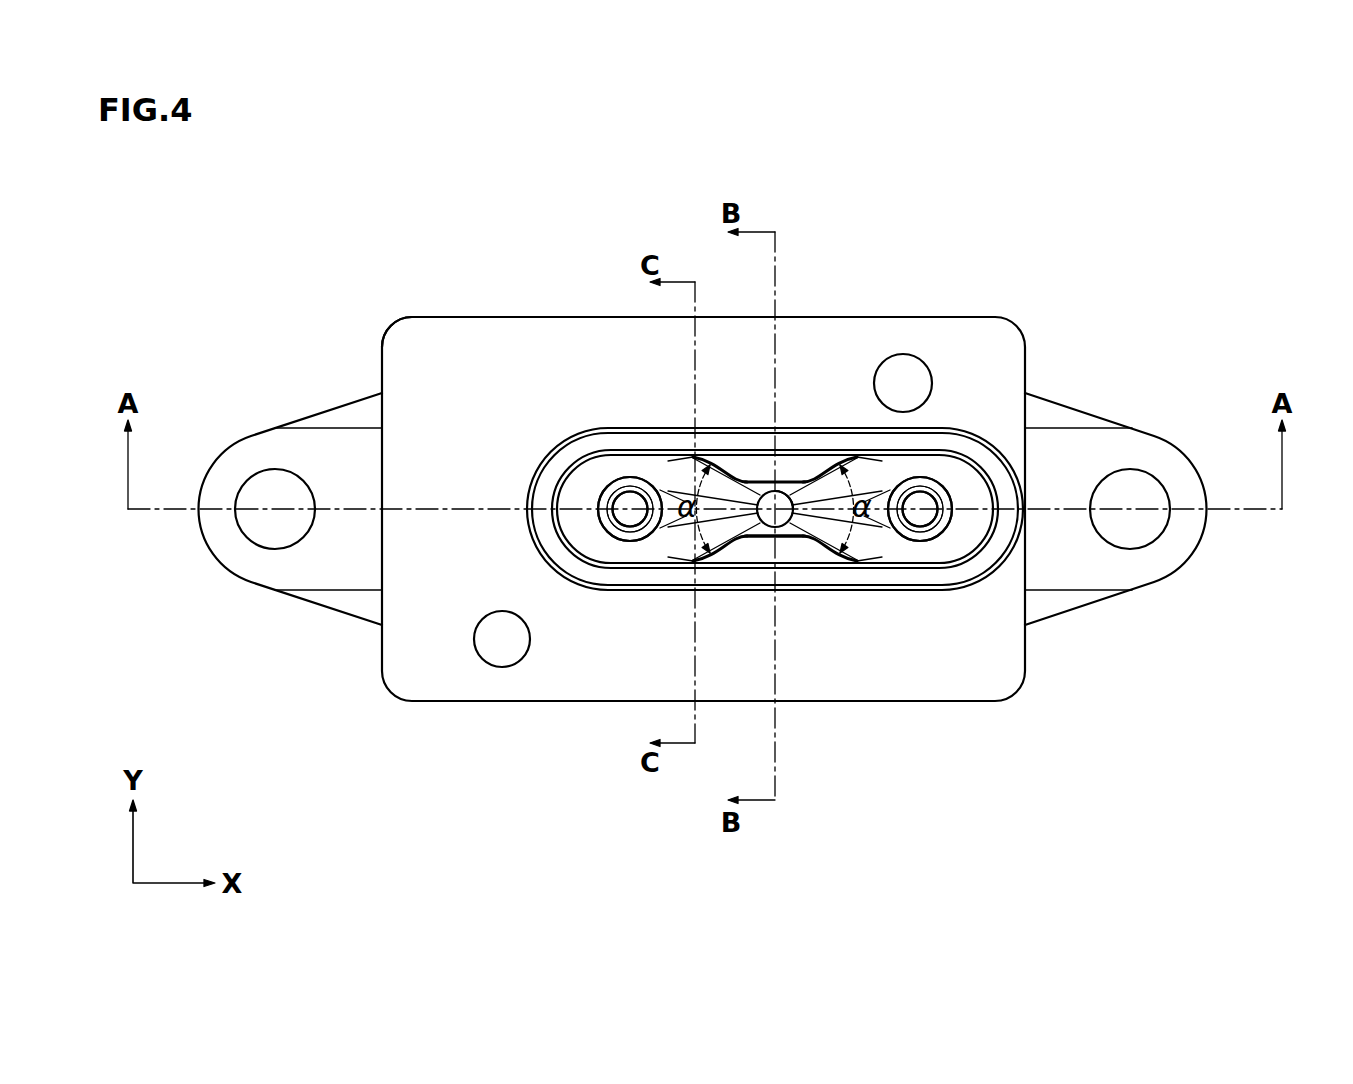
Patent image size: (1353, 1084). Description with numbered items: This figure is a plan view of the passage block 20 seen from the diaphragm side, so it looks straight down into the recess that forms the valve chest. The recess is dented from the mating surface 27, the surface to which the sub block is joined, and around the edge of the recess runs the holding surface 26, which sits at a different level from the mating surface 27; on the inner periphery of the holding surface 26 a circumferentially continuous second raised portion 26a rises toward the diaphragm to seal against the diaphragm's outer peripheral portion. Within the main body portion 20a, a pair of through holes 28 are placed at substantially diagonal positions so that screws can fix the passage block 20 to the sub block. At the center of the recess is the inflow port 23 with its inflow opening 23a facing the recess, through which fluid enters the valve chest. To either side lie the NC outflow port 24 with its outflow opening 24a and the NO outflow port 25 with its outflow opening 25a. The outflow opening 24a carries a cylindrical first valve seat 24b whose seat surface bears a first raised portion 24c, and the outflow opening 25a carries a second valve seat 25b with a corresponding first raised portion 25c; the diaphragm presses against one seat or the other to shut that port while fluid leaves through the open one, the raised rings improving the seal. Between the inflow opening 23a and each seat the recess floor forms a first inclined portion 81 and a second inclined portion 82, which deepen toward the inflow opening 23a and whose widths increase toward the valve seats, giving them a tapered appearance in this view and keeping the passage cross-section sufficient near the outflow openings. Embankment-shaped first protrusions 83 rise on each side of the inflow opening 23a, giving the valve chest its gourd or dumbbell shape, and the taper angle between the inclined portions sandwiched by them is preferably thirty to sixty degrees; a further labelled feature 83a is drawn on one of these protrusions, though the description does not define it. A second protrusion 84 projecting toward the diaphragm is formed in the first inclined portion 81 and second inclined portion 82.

The passage block 20 is at (988, 245).
The main body portion 20a is at (448, 343).
The inflow port 23 is at (790, 522).
The inflow opening 23a is at (789, 492).
The NC outflow port 24 is at (606, 535).
The outflow opening 24a is at (612, 468).
The first valve seat 24b is at (622, 517).
The first raised portion 24c is at (582, 477).
The NO outflow port 25 is at (945, 532).
The outflow opening 25a is at (918, 500).
The second valve seat 25b is at (943, 490).
The first raised portion 25c is at (920, 519).
The holding surface 26 is at (550, 482).
The second raised portion 26a is at (628, 470).
The mating surface 27 is at (410, 343).
The through holes 28 is at (905, 370).
The first inclined portion 81 is at (700, 548).
The second inclined portion 82 is at (853, 545).
The first protrusion 83 is at (758, 475).
The connecting portion surface 83a is at (805, 540).
The second protrusion 84 is at (668, 523).